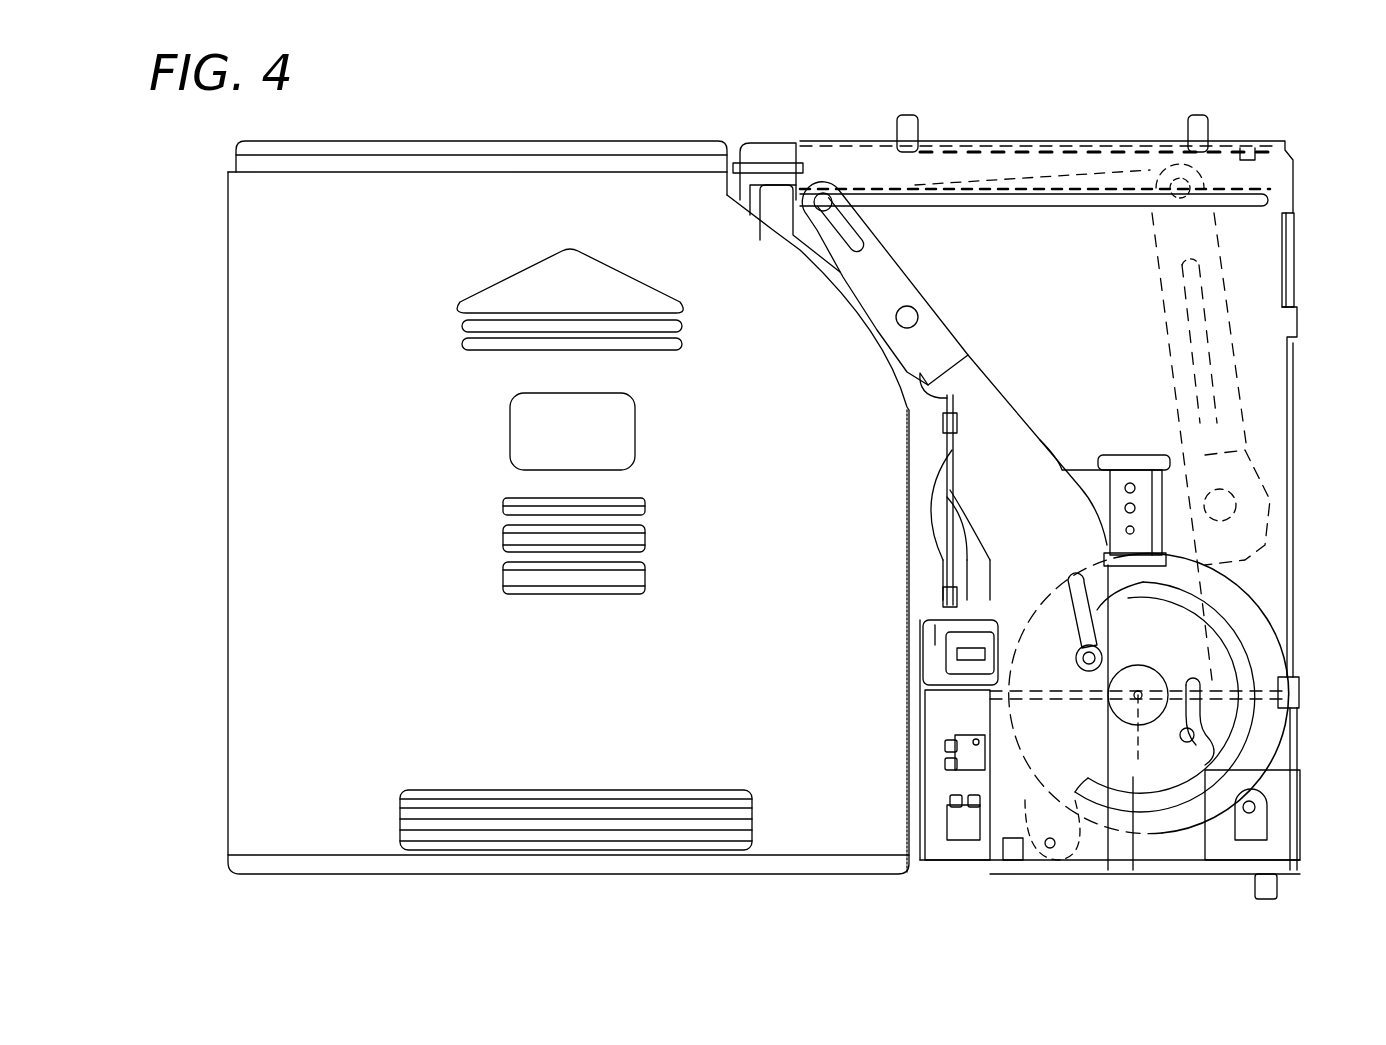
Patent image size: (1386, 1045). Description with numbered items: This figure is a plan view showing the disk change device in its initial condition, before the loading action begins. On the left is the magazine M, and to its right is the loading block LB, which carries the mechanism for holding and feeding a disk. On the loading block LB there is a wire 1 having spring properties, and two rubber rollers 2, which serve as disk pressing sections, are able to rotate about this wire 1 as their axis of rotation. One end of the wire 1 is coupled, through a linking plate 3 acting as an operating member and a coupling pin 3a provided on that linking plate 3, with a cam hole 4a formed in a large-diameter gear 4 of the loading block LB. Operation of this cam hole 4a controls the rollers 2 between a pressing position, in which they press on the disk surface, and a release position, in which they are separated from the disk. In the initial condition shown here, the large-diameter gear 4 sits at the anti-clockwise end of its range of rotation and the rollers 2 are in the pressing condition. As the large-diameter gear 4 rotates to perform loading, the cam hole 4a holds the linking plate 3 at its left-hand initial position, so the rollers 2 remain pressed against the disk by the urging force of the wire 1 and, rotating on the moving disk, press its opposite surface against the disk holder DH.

The magazine M is at (235, 470).
The disk holder DH is at (780, 192).
The loading block LB is at (1296, 240).
The wire 1 is at (952, 477).
The rollers 2 is at (943, 422).
The linking plate 3 is at (947, 660).
The coupling pin 3a is at (1058, 865).
The large-diameter gear 4 is at (1260, 642).
The cam hole 4a is at (1200, 740).